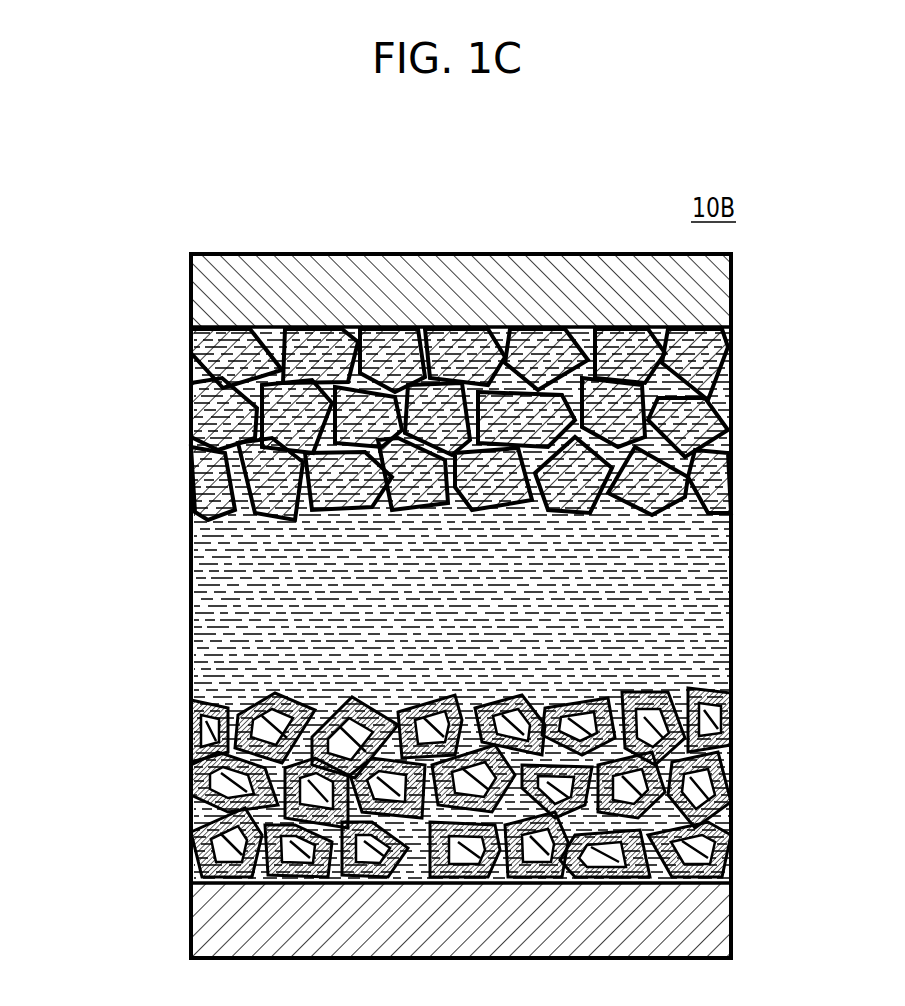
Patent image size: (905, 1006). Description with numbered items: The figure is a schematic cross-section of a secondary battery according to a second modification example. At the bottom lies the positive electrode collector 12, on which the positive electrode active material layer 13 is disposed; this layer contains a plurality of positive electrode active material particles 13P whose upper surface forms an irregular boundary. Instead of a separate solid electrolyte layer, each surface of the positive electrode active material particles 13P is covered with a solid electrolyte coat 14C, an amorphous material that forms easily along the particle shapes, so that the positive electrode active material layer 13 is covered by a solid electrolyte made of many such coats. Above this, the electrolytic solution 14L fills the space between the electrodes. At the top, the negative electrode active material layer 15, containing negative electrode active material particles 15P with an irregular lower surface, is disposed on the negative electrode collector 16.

The negative electrode collector 16 is at (703, 297).
The negative electrode active material layer 15 is at (448, 424).
The negative electrode active material particles 15P is at (192, 420).
The electrolytic solution 14L is at (703, 597).
The positive electrode active material layer 13 is at (460, 805).
The positive electrode active material particles 13P is at (191, 843).
The solid electrolyte coat 14C is at (207, 867).
The positive electrode collector 12 is at (703, 921).